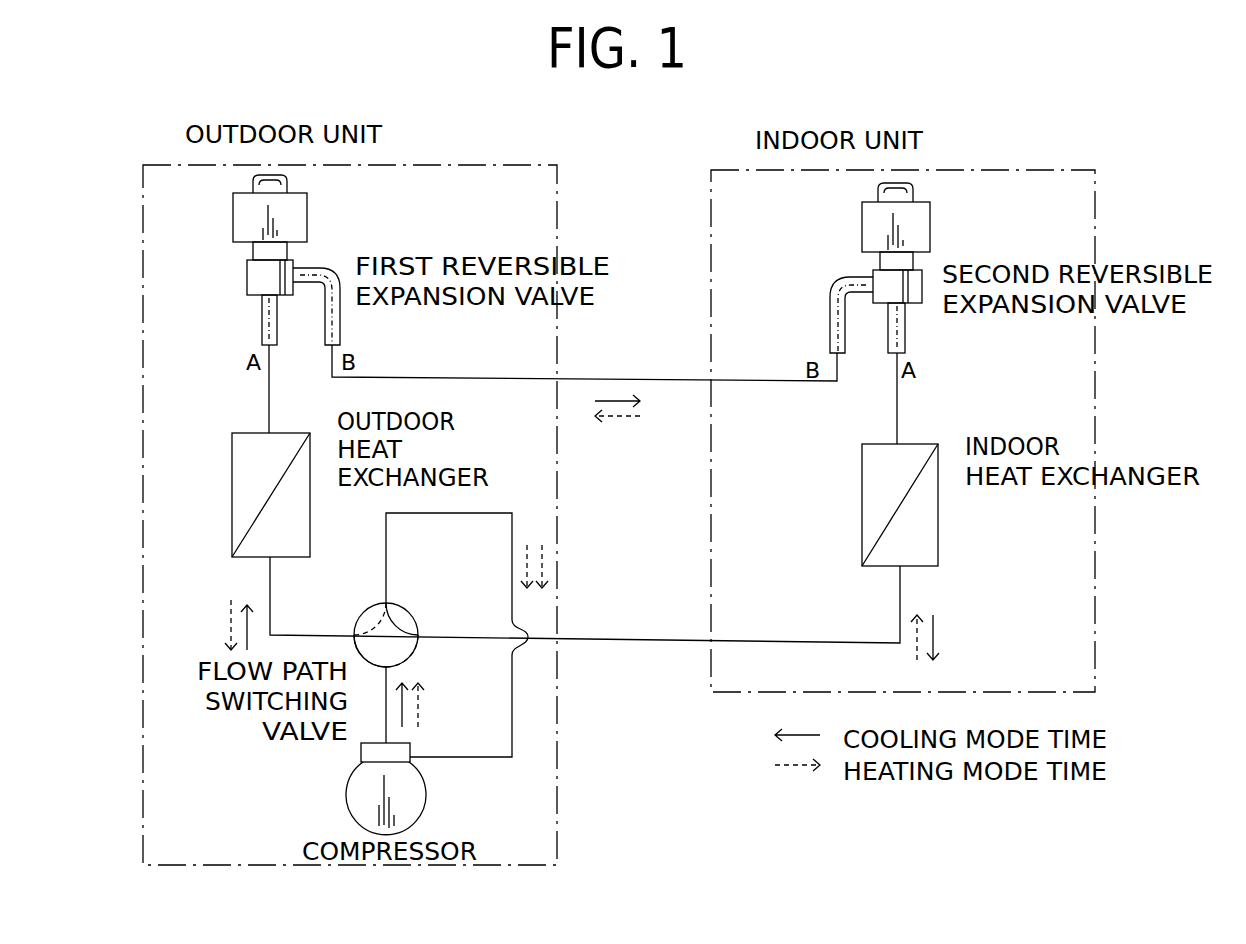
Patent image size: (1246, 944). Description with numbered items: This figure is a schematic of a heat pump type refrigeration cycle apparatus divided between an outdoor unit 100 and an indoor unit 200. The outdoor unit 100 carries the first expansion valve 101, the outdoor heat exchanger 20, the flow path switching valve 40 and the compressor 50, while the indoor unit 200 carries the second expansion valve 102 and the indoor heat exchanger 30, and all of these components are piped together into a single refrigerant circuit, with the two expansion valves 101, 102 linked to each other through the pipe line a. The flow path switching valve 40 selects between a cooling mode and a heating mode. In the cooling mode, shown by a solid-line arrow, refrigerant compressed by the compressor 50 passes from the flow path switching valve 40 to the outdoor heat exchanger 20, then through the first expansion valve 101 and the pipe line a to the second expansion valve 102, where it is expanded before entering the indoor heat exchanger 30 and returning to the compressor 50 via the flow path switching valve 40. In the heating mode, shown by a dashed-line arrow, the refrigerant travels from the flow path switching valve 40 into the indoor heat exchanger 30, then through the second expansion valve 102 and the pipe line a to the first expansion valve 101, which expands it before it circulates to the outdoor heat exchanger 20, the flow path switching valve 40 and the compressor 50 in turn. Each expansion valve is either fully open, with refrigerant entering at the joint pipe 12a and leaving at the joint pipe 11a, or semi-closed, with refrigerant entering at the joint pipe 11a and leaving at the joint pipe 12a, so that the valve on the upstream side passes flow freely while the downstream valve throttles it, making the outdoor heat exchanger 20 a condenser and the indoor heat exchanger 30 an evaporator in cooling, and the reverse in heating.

The outdoor unit 100 is at (443, 163).
The indoor unit 200 is at (958, 170).
The first expansion valve 101 is at (307, 216).
The second expansion valve 102 is at (930, 223).
The joint pipe 11a is at (341, 322).
The joint pipe 12a is at (264, 323).
The pipe line a is at (620, 379).
The outdoor heat exchanger 20 is at (310, 511).
The indoor heat exchanger 30 is at (938, 521).
The flow path switching valve 40 is at (415, 622).
The compressor 50 is at (426, 797).